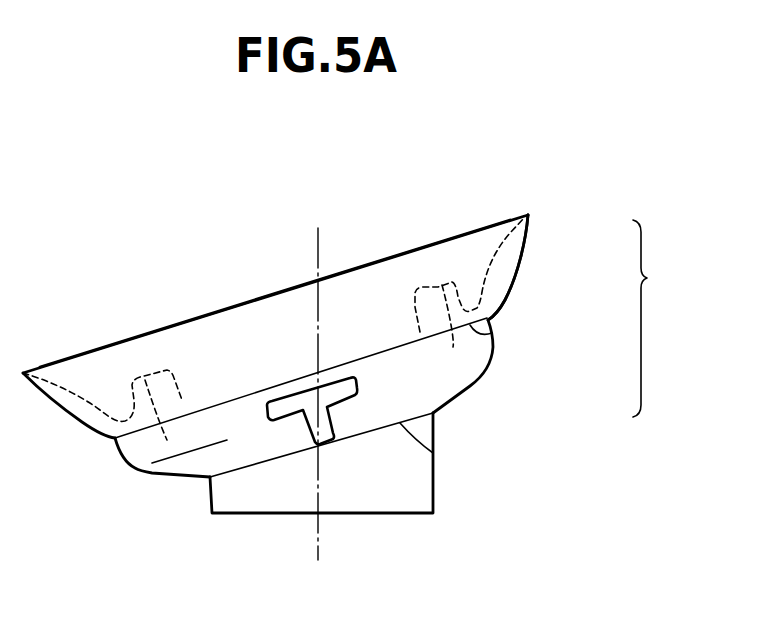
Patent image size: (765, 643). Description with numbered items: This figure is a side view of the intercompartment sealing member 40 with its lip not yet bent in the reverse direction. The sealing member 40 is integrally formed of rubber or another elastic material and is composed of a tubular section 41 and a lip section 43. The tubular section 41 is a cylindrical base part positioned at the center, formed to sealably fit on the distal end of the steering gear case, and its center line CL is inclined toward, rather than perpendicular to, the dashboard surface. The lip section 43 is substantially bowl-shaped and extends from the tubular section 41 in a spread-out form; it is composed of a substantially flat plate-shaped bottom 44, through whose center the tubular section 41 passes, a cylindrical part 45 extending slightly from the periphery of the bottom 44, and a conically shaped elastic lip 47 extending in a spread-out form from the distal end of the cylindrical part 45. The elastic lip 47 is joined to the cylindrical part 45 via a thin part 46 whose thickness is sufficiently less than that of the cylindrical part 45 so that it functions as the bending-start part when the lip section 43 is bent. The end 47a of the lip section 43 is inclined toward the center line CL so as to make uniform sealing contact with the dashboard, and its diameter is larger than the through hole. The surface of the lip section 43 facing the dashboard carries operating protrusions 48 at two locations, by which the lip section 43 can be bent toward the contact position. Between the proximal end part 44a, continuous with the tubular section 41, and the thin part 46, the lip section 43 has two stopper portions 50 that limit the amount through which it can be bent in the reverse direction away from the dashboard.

The intercompartment sealing member 40 is at (600, 165).
The tubular section 41 is at (420, 488).
The lip section 43 is at (663, 318).
The bottom 44 is at (460, 380).
The proximal end part 44a is at (433, 453).
The cylindrical part 45 is at (477, 352).
The thin part 46 is at (493, 337).
The elastic lip 47 is at (481, 252).
The end of the lip section 47a is at (360, 265).
The operating protrusion 48 is at (133, 378).
The stopper portion 50 is at (283, 403).
The center line CL is at (318, 547).